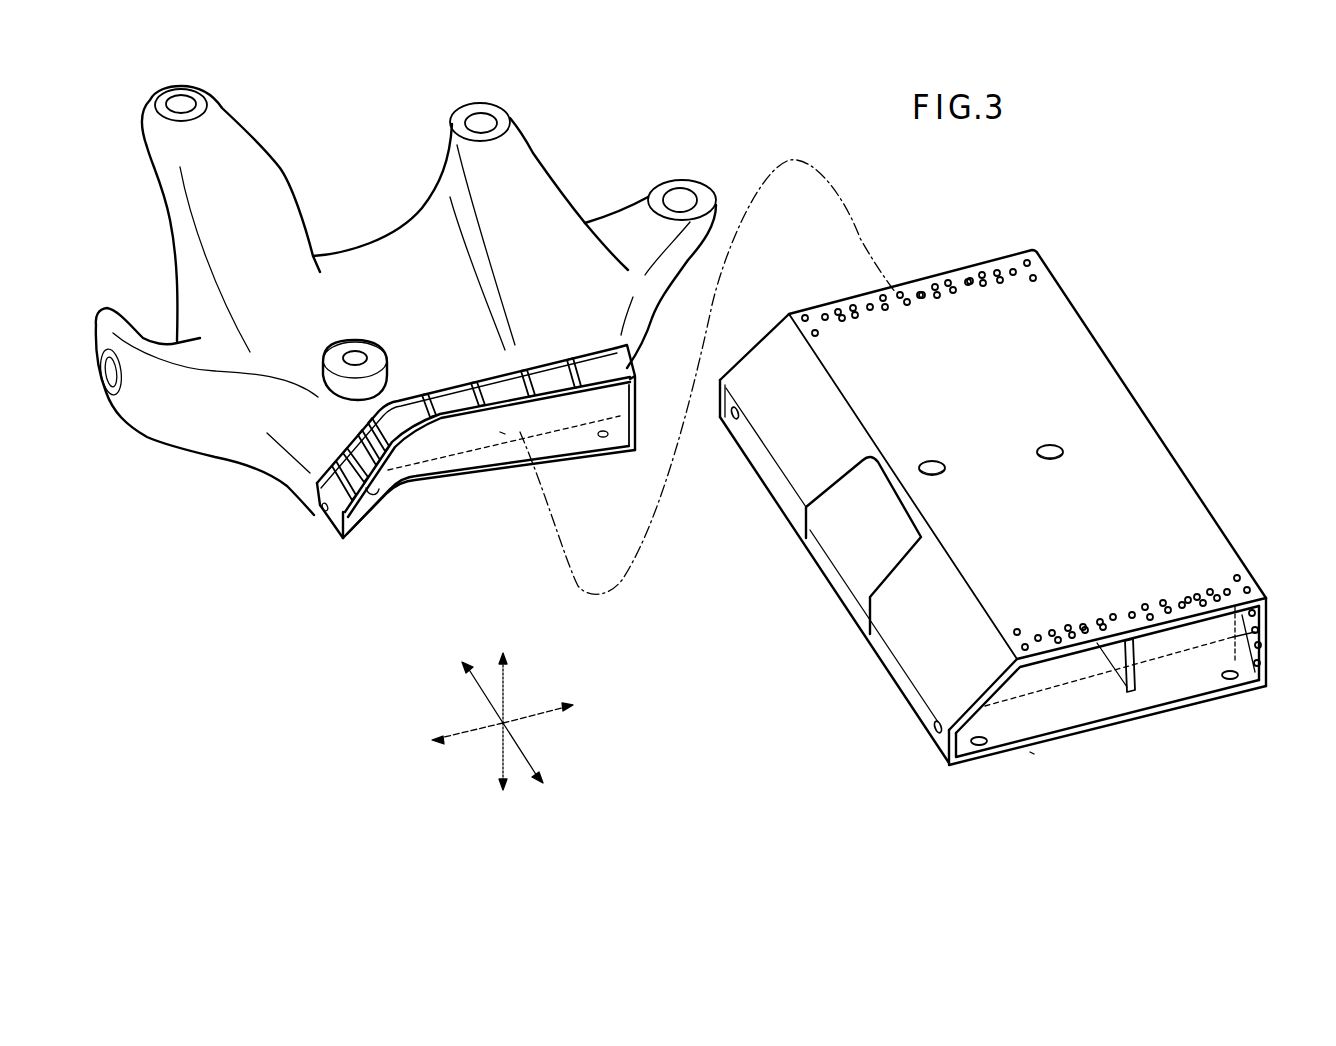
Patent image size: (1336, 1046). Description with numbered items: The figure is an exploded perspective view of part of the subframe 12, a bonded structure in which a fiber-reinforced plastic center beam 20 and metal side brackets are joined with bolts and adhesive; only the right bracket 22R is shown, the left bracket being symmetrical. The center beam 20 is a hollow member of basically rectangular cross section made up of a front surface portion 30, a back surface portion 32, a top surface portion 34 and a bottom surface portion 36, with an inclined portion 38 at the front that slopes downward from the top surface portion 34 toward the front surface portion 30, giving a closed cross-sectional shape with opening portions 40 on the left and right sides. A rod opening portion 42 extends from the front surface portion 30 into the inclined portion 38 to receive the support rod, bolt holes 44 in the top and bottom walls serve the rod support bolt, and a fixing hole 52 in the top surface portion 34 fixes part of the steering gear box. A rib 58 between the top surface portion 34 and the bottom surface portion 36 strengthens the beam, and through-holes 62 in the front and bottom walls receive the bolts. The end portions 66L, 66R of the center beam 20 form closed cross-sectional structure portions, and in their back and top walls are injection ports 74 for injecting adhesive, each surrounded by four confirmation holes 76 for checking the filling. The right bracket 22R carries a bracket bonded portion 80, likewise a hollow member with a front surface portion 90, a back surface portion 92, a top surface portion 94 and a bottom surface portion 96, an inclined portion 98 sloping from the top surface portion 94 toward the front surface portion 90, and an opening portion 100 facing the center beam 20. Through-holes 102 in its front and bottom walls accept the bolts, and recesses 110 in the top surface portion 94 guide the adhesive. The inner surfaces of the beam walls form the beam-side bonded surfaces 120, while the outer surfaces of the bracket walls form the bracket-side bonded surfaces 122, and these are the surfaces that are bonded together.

The subframe 12 is at (1086, 162).
The center beam 20 is at (1119, 380).
The right bracket 22R is at (353, 247).
The front surface portion 30 is at (885, 647).
The back surface portion 32 is at (1254, 580).
The top surface portion 34 is at (1088, 316).
The bottom surface portion 36 is at (1046, 713).
The inclined portion 38 is at (768, 353).
The opening portions 40 is at (1177, 672).
The rod opening portion 42 is at (848, 493).
The bolt holes 44 is at (935, 461).
The fixing hole 52 is at (1052, 445).
The rib 58 is at (1133, 660).
The through-holes 62 is at (744, 414).
The right end portion 66R is at (710, 420).
The left end portion 66L is at (938, 774).
The injection ports 74 is at (826, 320).
The confirmation holes 76 is at (854, 313).
The bracket bonded portion 80 is at (630, 360).
The front surface portion 90 is at (343, 545).
The back surface portion 92 is at (638, 415).
The top surface portion 94 is at (595, 365).
The bottom surface portion 96 is at (524, 441).
The inclined portion 98 is at (345, 465).
The opening portion 100 is at (568, 438).
The through-holes 102 is at (325, 512).
The recesses 110 is at (472, 383).
The beam-side bonded surfaces 120 is at (1034, 753).
The bracket-side bonded surfaces 122 is at (457, 465).